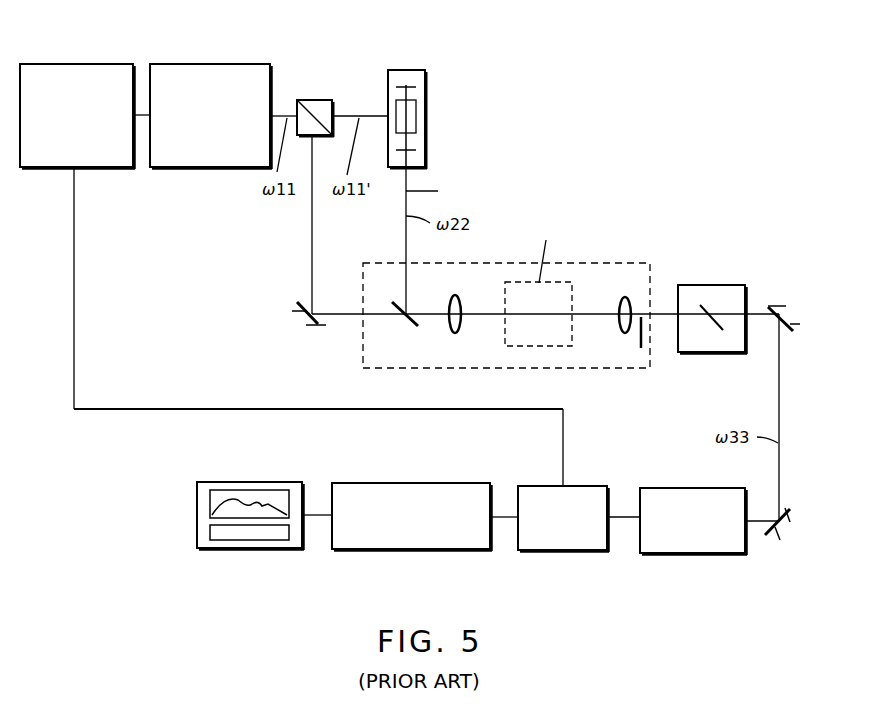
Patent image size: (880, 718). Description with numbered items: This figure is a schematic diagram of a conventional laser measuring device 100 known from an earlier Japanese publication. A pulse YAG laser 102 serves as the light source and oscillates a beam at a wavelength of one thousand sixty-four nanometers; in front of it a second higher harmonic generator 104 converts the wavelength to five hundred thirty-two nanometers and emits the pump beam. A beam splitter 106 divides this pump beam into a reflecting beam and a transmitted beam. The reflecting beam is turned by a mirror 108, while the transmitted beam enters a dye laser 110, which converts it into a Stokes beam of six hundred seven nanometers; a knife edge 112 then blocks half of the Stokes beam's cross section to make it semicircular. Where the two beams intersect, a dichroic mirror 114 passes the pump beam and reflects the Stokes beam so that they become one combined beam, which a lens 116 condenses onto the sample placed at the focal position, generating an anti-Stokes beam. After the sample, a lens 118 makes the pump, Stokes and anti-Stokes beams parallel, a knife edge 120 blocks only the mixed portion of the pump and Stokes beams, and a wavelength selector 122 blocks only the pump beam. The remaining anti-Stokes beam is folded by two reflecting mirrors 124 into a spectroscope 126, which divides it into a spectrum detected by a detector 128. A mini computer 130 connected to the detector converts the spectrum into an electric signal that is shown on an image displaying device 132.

The laser measuring device 100 is at (565, 138).
The pulse YAG laser 102 is at (84, 62).
The second higher harmonic generator 104 is at (208, 62).
The beam splitter 106 is at (316, 98).
The mirror 108 is at (298, 305).
The dye laser 110 is at (405, 68).
The knife edge 112 is at (430, 190).
The dichroic mirror 114 is at (407, 322).
The lens 116 is at (458, 332).
The lens 118 is at (622, 332).
The knife edge 120 is at (645, 340).
The wavelength selector 122 is at (706, 283).
The reflecting mirrors 124 is at (777, 302).
The spectroscope 126 is at (705, 557).
The detector 128 is at (570, 553).
The mini computer 130 is at (415, 552).
The image displaying device 132 is at (262, 550).